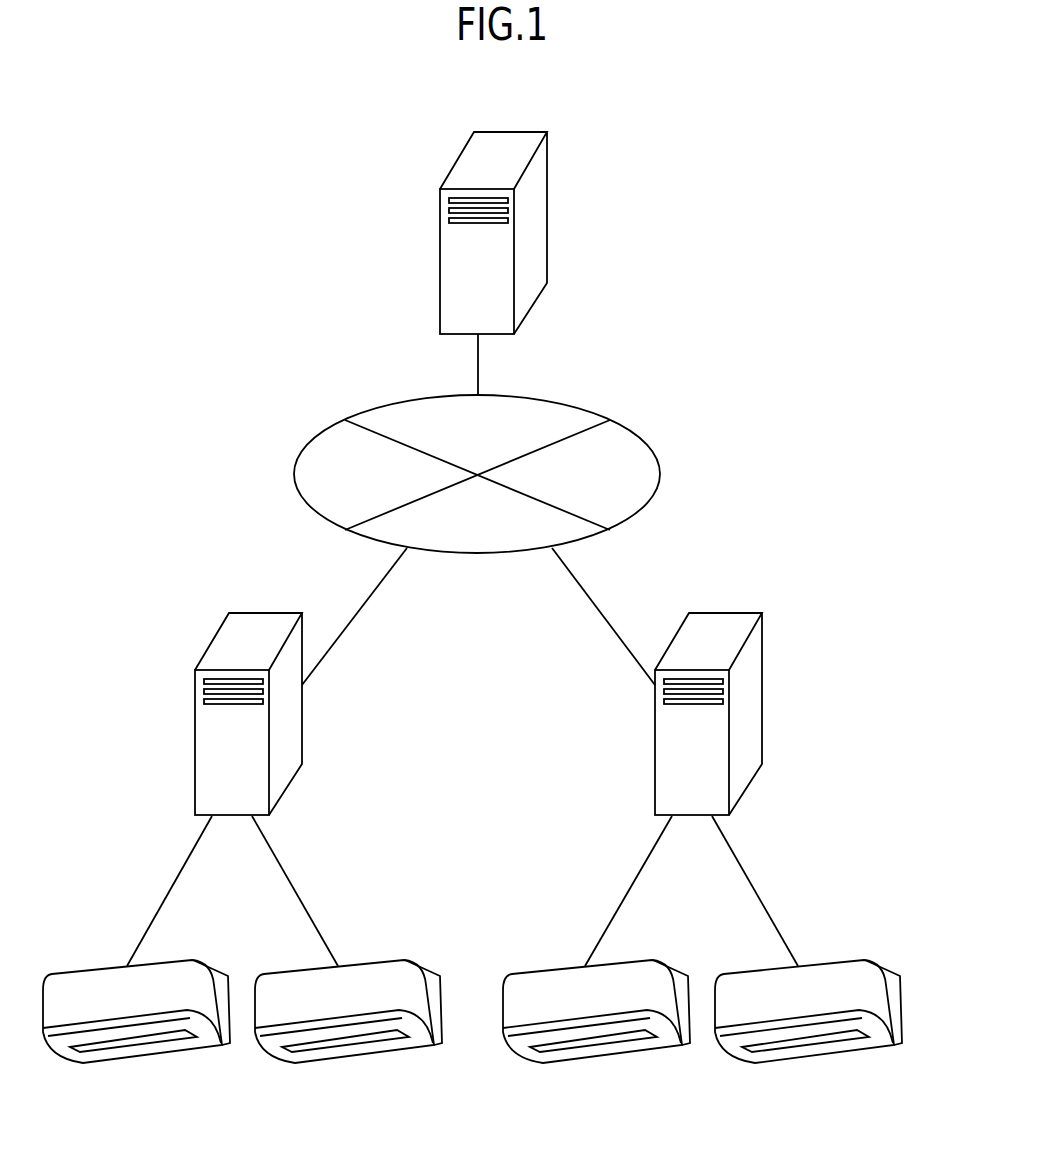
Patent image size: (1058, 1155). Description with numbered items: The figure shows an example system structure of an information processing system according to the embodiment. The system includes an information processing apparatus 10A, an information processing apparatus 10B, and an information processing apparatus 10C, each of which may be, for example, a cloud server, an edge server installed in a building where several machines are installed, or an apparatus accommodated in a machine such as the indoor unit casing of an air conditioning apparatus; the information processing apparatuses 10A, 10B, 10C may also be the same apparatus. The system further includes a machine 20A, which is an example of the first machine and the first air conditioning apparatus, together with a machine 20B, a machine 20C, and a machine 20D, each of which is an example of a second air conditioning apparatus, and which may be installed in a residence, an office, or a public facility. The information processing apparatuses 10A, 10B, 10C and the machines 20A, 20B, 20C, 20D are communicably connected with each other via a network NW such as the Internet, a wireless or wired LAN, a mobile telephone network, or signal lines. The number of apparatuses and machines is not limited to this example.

The information processing apparatus 10A is at (511, 133).
The information processing apparatus 10B is at (268, 613).
The information processing apparatus 10C is at (728, 613).
The network NW is at (553, 400).
The machine 20A is at (212, 965).
The machine 20B is at (424, 965).
The machine 20C is at (672, 965).
The machine 20D is at (884, 965).